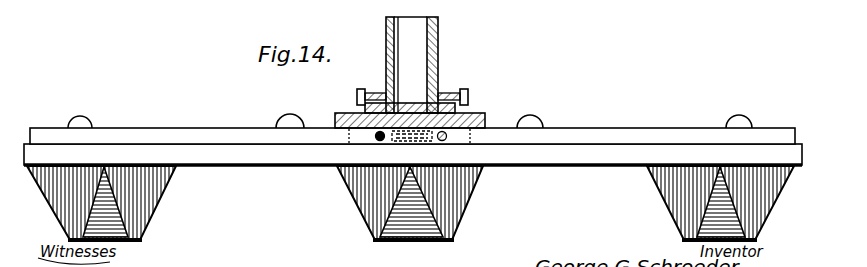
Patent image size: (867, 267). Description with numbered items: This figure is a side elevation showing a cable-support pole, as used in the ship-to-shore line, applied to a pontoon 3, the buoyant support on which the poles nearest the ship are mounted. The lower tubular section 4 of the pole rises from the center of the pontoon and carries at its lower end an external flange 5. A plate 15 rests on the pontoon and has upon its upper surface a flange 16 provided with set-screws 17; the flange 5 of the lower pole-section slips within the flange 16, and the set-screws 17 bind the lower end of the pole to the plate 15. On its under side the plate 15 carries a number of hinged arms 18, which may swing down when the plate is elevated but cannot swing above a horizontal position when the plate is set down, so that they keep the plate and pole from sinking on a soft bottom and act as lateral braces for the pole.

The pontoon 3 is at (528, 152).
The lower tubular section 4 is at (438, 33).
The external flange 5 is at (465, 101).
The plate 15 is at (487, 118).
The flange 16 is at (458, 92).
The set-screws 17 is at (358, 92).
The hinged arms 18 is at (270, 121).